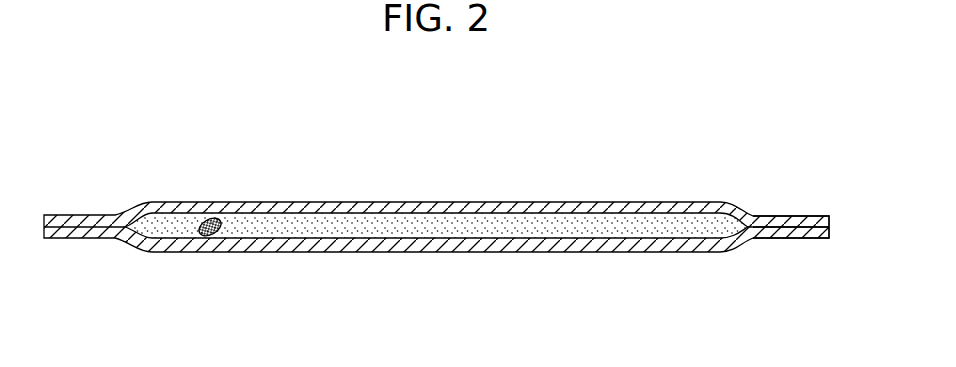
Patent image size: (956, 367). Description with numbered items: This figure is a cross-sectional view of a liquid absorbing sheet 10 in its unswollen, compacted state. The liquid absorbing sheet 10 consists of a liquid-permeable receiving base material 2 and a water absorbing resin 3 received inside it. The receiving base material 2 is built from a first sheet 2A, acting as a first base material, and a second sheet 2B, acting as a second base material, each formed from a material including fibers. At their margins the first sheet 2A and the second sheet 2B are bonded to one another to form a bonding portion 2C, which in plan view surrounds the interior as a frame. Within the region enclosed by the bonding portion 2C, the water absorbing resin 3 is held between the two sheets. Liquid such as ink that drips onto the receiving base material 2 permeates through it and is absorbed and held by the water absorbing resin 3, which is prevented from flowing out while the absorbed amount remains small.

The liquid absorbing sheet 10 is at (478, 141).
The receiving base material 2 is at (580, 210).
The first sheet 2A is at (80, 215).
The second sheet 2B is at (75, 238).
The bonding portion 2C is at (795, 216).
The water absorbing resin 3 is at (277, 227).